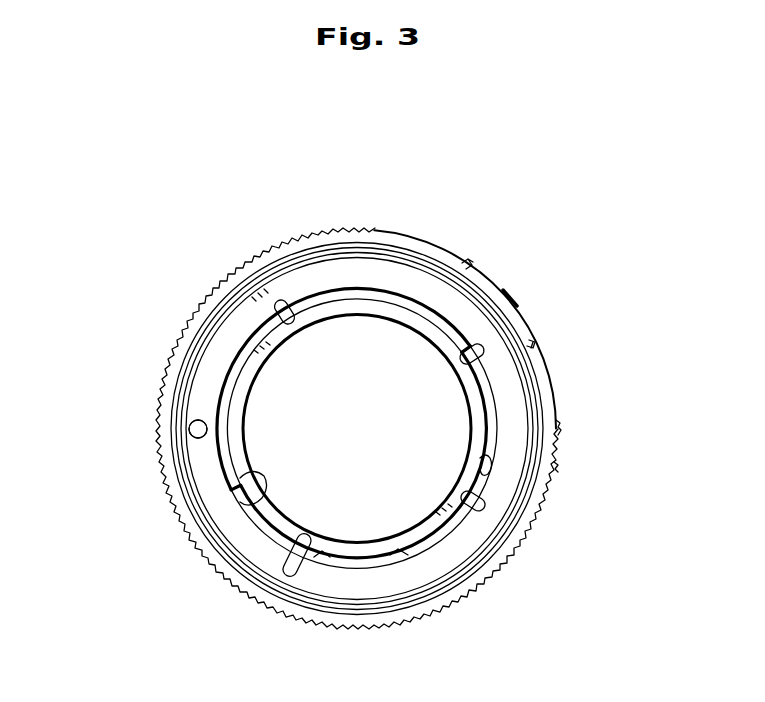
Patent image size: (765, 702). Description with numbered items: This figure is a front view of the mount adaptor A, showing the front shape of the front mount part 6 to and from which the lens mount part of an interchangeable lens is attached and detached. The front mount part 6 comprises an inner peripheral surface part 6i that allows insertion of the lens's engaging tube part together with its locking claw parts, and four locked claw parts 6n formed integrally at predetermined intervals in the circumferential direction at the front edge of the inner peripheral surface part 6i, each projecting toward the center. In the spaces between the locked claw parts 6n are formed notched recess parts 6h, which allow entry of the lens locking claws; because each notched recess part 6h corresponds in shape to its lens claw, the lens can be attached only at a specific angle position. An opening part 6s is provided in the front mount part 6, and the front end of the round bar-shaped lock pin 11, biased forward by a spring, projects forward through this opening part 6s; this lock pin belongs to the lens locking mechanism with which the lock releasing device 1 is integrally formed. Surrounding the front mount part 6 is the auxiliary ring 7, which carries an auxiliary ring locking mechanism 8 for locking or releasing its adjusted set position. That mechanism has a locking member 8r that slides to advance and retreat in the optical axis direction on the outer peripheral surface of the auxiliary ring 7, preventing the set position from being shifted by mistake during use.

The lock releasing device 1 is at (158, 412).
The front mount part 6 is at (517, 400).
The notched recess parts 6h is at (293, 300).
The locked claw parts 6n is at (357, 300).
The inner peripheral surface part 6i is at (452, 343).
The opening part 6s is at (203, 418).
The auxiliary ring 7 is at (170, 440).
The auxiliary ring locking mechanism 8 is at (467, 337).
The locking member 8r is at (503, 290).
The lock pin 11 is at (196, 441).
The mount adaptor A is at (409, 200).